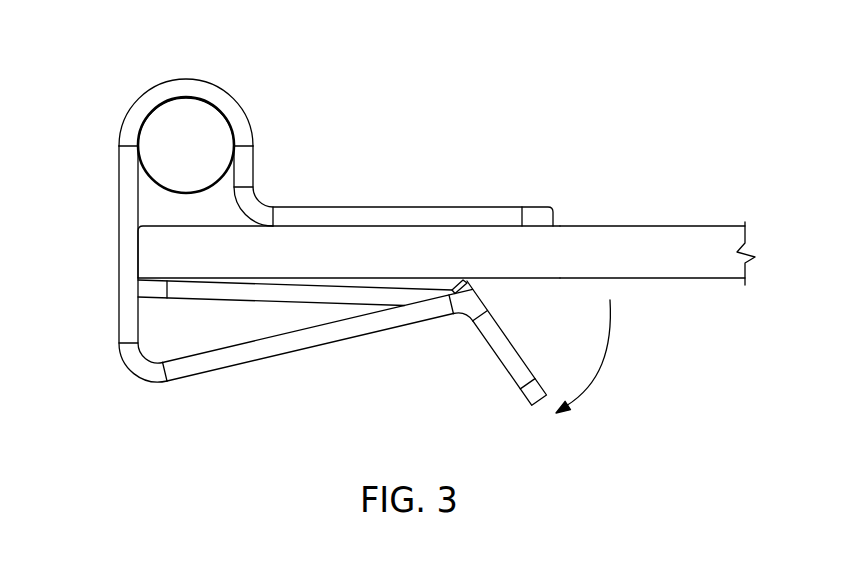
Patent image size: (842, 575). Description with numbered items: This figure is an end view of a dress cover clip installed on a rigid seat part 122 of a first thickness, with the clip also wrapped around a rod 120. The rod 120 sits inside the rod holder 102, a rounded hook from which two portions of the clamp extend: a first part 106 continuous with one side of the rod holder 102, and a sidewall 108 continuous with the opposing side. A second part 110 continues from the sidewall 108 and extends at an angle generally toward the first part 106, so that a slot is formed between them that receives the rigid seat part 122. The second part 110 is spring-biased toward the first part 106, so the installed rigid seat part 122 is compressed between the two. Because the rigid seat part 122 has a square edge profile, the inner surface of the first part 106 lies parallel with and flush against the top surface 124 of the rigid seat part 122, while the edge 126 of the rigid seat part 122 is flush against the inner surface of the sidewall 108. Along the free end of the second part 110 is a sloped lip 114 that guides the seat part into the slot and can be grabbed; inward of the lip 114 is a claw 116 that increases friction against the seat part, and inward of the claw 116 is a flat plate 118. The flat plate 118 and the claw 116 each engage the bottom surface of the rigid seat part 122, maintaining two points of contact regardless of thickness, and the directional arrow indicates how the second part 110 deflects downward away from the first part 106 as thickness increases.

The rod holder 102 is at (187, 86).
The first part 106 is at (509, 208).
The sidewall 108 is at (127, 215).
The second part 110 is at (343, 338).
The lip 114 is at (494, 355).
The claw 116 is at (457, 279).
The flat plate 118 is at (265, 302).
The rod 120 is at (203, 137).
The rigid seat part 122 is at (378, 242).
The top surface 124 is at (667, 226).
The edge 126 is at (137, 253).